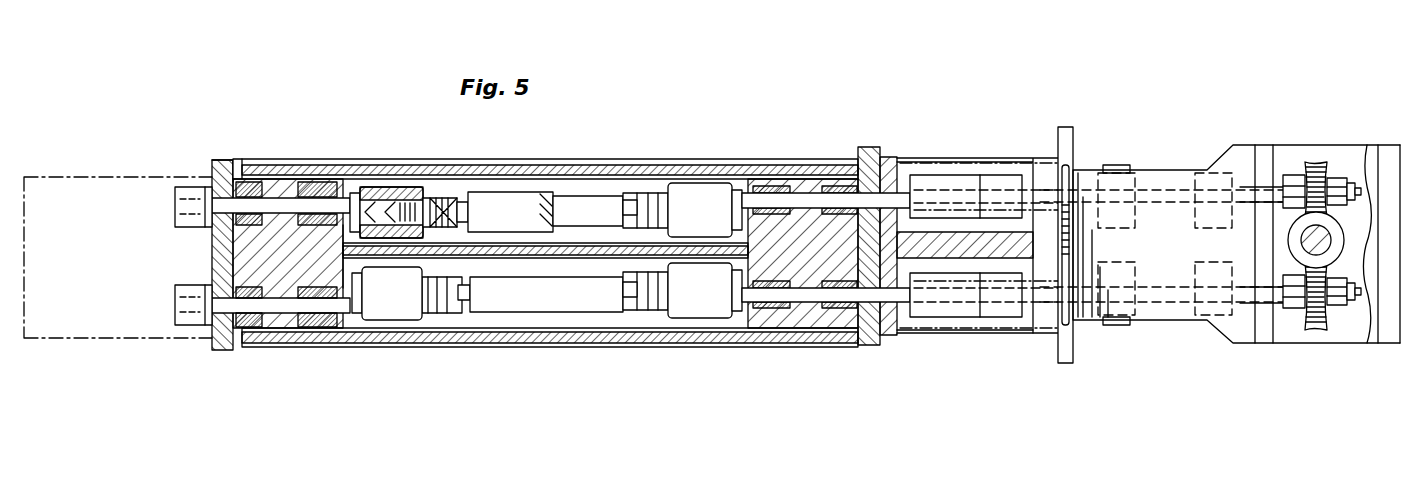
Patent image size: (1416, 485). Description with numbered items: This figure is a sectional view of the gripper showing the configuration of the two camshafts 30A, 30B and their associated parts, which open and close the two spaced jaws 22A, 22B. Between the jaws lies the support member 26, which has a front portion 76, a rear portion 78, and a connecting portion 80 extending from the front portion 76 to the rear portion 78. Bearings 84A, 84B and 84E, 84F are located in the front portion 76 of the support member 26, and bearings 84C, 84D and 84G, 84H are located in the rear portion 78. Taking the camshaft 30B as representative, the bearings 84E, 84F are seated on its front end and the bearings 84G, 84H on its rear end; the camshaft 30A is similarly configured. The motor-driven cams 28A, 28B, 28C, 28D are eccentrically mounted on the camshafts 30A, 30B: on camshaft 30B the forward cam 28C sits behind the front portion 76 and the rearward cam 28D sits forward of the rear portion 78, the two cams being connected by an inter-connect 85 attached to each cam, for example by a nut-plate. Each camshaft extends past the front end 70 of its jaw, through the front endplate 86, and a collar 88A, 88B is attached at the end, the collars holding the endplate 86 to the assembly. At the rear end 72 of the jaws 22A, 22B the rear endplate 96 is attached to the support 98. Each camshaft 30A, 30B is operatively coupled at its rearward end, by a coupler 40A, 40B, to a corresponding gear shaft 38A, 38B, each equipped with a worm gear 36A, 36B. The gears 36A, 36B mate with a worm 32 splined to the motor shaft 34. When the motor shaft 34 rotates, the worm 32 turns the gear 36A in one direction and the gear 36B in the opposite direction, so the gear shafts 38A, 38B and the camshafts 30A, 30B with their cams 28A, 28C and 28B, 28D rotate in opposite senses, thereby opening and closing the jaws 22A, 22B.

The jaw 22A is at (594, 160).
The jaw 22B is at (573, 347).
The support member 26 is at (237, 255).
The cam 28A is at (380, 188).
The cam 28B is at (693, 183).
The forward cam 28C is at (405, 320).
The rearward cam 28D is at (710, 318).
The camshaft 30A is at (884, 200).
The camshaft 30B is at (900, 297).
The worm 32 is at (1302, 252).
The motor shaft 34 is at (1300, 238).
The worm gear 36A is at (1315, 162).
The worm gear 36B is at (1318, 330).
The gear shaft 38A is at (1168, 190).
The gear shaft 38B is at (1167, 302).
The coupler 40A is at (953, 175).
The coupler 40B is at (970, 317).
The front end 70 is at (235, 163).
The rear end 72 is at (860, 147).
The front portion 76 is at (283, 290).
The rear portion 78 is at (810, 265).
The connecting portion 80 is at (623, 259).
The bearing 84A is at (253, 181).
The bearing 84B is at (320, 182).
The bearing 84C is at (763, 186).
The bearing 84D is at (840, 186).
The bearing 84E is at (255, 328).
The bearing 84F is at (330, 345).
The bearing 84G is at (760, 308).
The bearing 84H is at (843, 308).
The inter-connect 85 is at (508, 312).
The front endplate 86 is at (219, 160).
The collar 88A is at (183, 185).
The collar 88B is at (183, 325).
The rear endplate 96 is at (867, 157).
The support 98 is at (1157, 170).